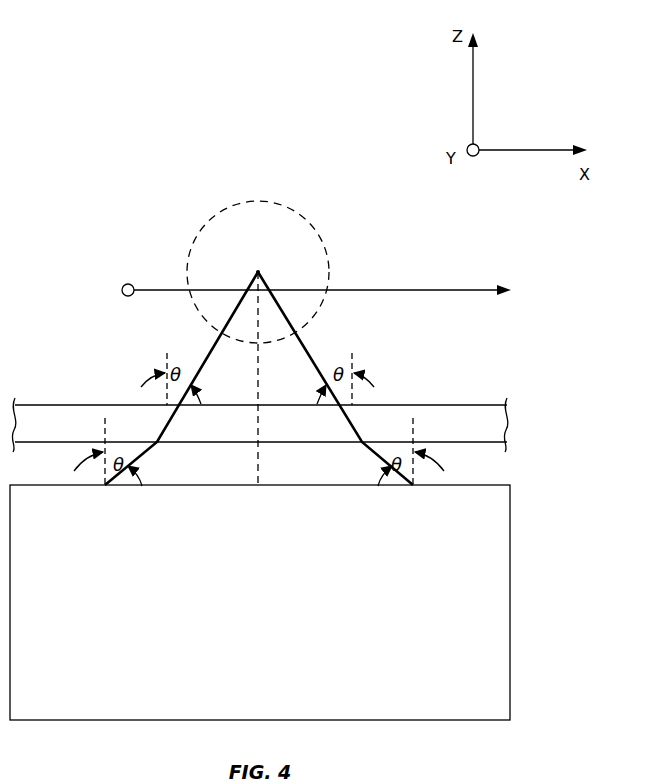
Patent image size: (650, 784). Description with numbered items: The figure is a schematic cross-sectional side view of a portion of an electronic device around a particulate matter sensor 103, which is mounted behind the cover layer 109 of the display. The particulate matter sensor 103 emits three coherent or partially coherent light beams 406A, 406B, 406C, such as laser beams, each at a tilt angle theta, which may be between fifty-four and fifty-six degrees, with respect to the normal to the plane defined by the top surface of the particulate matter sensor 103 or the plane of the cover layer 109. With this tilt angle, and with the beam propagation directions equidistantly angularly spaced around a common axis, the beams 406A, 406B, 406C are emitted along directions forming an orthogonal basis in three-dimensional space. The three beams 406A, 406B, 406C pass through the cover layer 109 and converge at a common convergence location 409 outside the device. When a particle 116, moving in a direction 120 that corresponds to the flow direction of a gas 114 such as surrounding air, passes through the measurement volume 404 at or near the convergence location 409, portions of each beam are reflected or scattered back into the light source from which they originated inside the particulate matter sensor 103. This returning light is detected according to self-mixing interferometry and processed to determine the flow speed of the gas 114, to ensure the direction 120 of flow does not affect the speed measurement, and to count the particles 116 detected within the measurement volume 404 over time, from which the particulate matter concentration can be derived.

The gas 114 is at (81, 202).
The particle 116 is at (130, 283).
The direction 120 is at (464, 287).
The measurement volume 404 is at (312, 225).
The convergence location 409 is at (260, 272).
The light beam 406A is at (208, 344).
The light beam 406B is at (258, 384).
The light beam 406C is at (310, 344).
The cover layer 109 is at (489, 435).
The particulate matter sensor 103 is at (246, 649).